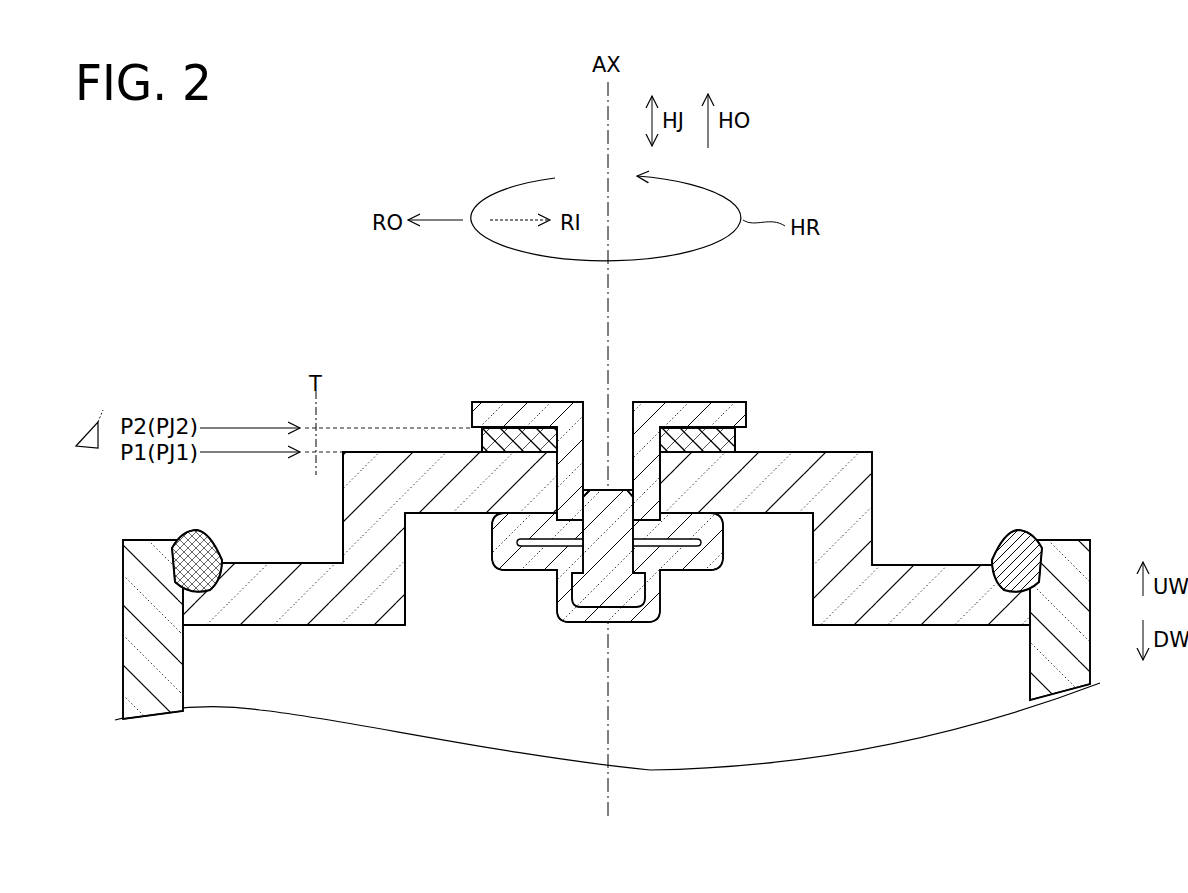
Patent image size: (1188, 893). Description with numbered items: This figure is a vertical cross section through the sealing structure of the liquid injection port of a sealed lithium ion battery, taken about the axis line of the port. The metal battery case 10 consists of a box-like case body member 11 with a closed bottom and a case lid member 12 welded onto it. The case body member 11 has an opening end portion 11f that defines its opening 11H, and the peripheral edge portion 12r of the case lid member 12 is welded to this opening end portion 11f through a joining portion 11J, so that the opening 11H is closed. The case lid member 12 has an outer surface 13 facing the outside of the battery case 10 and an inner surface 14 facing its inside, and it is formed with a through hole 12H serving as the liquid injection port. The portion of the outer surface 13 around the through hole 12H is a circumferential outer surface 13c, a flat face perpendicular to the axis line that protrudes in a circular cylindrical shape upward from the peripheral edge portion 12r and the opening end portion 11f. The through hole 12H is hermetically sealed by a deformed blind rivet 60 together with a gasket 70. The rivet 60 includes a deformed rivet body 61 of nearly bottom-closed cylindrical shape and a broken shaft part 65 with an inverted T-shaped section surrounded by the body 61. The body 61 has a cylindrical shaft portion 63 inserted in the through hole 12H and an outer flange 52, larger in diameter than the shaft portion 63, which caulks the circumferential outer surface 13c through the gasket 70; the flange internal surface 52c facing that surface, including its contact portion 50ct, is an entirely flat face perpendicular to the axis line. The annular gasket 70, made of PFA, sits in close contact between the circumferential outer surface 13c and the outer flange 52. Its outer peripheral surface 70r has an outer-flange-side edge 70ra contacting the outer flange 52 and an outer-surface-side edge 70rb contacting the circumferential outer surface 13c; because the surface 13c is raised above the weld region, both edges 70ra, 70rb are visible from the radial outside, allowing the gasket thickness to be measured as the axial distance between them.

The battery case 10 is at (1115, 388).
The case body member 11 is at (1098, 539).
The opening end portion 11f is at (197, 594).
The opening 11H is at (250, 526).
The joining portion 11J is at (1022, 534).
The case lid member 12 is at (958, 563).
The through hole 12H is at (673, 534).
The peripheral edge portion 12r is at (285, 553).
The outer surface 13 is at (893, 563).
The circumferential outer surface 13c is at (742, 440).
The inner surface 14 is at (893, 627).
The contact portion 50ct is at (512, 444).
The outer flange 52 is at (718, 438).
The flange internal surface 52c is at (738, 433).
The deformed blind rivet 60 is at (558, 412).
The deformed rivet body 61 is at (541, 572).
The shaft portion 63 is at (650, 442).
The broken shaft part 65 is at (636, 622).
The gasket 70 is at (536, 442).
The outer peripheral surface 70r is at (478, 442).
The outer-flange-side edge 70ra is at (480, 435).
The outer-surface-side edge 70rb is at (480, 447).